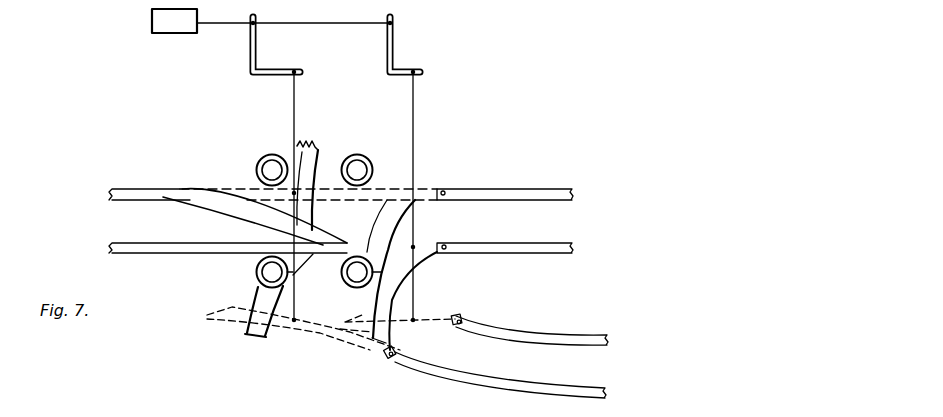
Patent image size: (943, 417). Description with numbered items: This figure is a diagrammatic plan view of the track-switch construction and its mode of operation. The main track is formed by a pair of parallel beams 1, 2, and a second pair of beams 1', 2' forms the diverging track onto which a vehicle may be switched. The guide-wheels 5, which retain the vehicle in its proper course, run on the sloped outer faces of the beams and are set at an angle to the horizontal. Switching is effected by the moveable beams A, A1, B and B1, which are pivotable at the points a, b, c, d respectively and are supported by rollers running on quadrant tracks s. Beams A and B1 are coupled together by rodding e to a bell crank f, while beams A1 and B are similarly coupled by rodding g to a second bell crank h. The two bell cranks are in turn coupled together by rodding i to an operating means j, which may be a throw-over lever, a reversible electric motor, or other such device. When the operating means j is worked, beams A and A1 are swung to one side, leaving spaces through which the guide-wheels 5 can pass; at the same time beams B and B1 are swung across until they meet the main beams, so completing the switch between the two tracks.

The beam 1 is at (341, 239).
The beam 2 is at (341, 184).
The branch track rail 1' is at (500, 375).
The branch track rail 2' is at (532, 328).
The guide-wheel 5 is at (258, 169).
The pivot point a is at (443, 190).
The pivot point b is at (445, 244).
The pivot point c is at (461, 316).
The pivot point d is at (389, 361).
The rodding e is at (290, 102).
The bell crank f is at (250, 60).
The rodding g is at (414, 126).
The bell crank h is at (393, 68).
The rodding i is at (225, 28).
The throw-over lever or reversible electric motor j is at (171, 29).
The quadrant track s is at (321, 155).
The beam A is at (403, 185).
The beam A1 is at (428, 255).
The beam B is at (424, 325).
The beam B1 is at (332, 340).